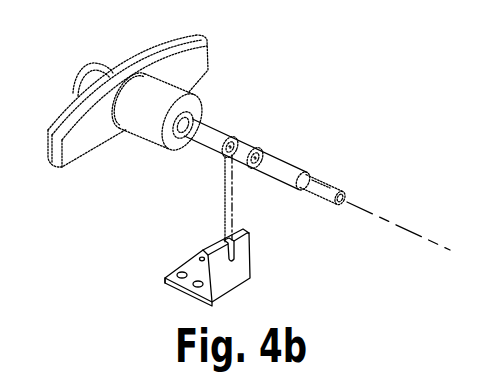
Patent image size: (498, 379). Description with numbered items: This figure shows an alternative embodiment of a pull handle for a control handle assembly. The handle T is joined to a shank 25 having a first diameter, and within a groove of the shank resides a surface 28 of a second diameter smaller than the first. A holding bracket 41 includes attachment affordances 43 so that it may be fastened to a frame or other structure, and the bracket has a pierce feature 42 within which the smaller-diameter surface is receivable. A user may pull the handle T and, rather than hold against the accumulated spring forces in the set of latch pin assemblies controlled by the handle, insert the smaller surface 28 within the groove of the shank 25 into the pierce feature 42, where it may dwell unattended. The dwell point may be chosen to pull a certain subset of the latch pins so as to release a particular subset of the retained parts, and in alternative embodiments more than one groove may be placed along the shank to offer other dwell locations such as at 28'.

The handle T is at (210, 58).
The shank 25 is at (297, 167).
The surface 28 is at (258, 119).
The dwell location 28' is at (309, 113).
The holding bracket 41 is at (219, 258).
The pierce feature 42 is at (236, 250).
The attachment affordances 43 is at (178, 272).